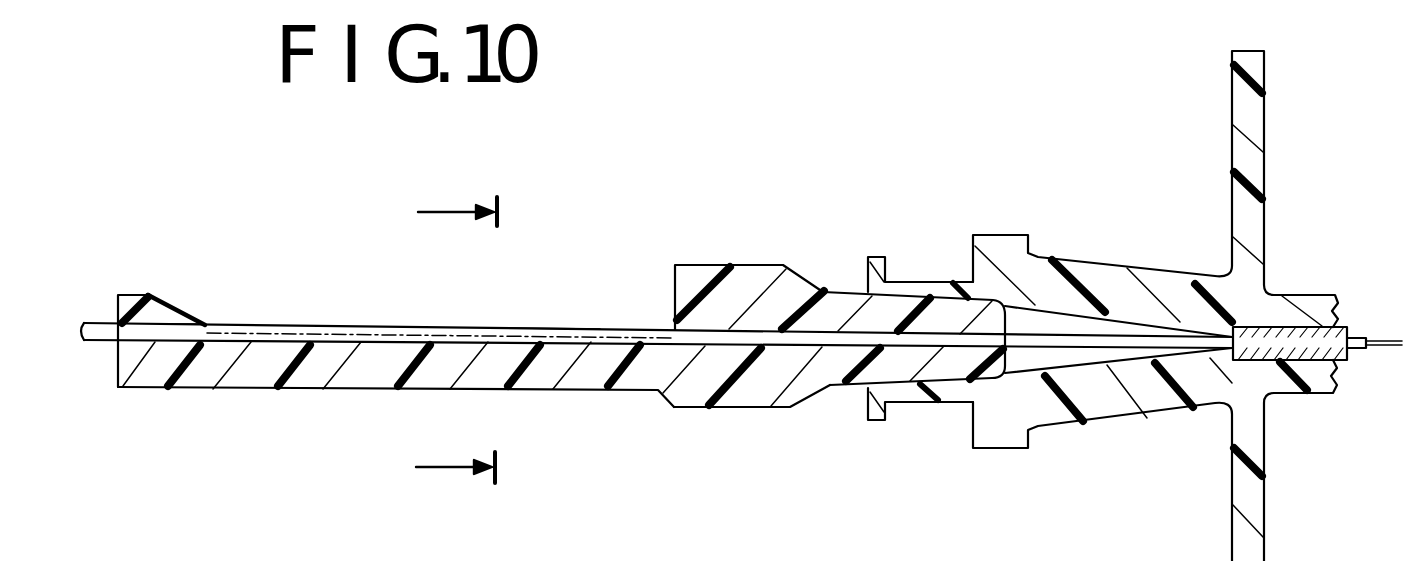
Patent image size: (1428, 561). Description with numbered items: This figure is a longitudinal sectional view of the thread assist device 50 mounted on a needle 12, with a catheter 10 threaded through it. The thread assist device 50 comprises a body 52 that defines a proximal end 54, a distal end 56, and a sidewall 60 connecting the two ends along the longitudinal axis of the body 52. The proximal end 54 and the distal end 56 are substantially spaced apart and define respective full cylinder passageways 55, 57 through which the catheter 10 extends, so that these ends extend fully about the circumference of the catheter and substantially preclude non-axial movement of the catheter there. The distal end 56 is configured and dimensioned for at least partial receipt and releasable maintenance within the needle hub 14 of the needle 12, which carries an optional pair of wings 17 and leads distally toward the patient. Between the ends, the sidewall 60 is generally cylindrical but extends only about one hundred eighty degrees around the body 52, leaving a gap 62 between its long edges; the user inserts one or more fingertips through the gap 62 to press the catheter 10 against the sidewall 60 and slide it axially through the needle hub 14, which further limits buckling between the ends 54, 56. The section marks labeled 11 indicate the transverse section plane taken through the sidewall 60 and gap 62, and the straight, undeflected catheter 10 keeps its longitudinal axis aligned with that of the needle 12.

The catheter 10 is at (102, 350).
The section line 11- 11 is at (420, 340).
The needle 12 is at (1365, 315).
The needle hub 14 is at (920, 283).
The wings 17 is at (1238, 102).
The thread assist device 50 is at (661, 264).
The body 52 is at (555, 318).
The proximal end 54 is at (148, 323).
The full cylinder passageway 55 is at (170, 318).
The distal end 56 is at (802, 283).
The full cylinder passageway 57 is at (771, 333).
The sidewall 60 is at (647, 367).
The gap 62 is at (656, 301).